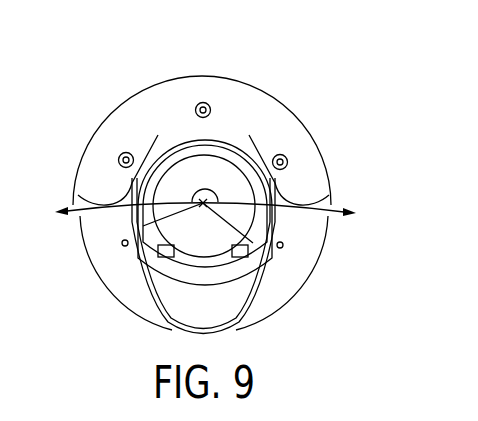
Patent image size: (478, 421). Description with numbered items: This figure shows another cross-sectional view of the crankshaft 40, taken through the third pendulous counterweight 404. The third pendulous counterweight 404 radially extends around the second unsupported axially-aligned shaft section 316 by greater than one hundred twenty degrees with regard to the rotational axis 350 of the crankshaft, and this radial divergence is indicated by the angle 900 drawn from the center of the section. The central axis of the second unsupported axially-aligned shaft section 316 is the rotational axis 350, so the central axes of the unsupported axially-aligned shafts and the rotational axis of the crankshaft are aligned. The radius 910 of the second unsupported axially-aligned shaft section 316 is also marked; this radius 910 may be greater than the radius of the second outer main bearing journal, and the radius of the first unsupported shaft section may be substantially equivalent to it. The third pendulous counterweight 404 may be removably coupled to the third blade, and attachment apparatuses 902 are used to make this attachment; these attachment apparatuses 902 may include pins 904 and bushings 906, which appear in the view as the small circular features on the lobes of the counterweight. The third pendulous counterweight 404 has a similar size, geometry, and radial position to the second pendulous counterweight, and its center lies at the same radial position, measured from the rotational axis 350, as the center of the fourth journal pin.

The crankshaft 40 is at (371, 94).
The third pendulous counterweight 404 is at (257, 98).
The angle 900 is at (202, 197).
The attachment apparatuses 902 is at (190, 80).
The pins 904 is at (210, 103).
The bushings 906 is at (84, 181).
The radius 910 is at (253, 208).
The second unsupported axially-aligned shaft section 316 is at (178, 239).
The rotational axis 350 is at (143, 226).